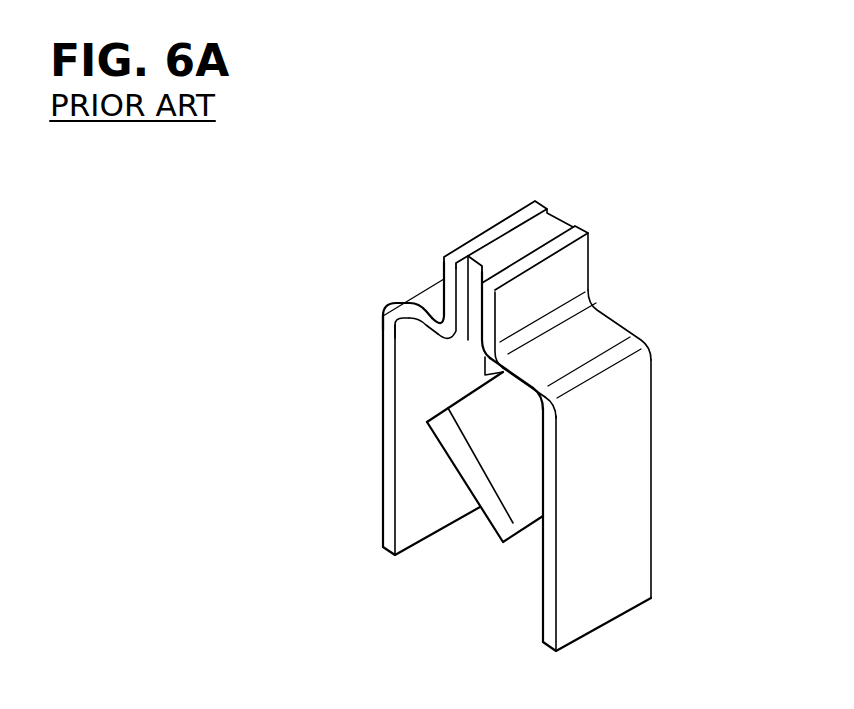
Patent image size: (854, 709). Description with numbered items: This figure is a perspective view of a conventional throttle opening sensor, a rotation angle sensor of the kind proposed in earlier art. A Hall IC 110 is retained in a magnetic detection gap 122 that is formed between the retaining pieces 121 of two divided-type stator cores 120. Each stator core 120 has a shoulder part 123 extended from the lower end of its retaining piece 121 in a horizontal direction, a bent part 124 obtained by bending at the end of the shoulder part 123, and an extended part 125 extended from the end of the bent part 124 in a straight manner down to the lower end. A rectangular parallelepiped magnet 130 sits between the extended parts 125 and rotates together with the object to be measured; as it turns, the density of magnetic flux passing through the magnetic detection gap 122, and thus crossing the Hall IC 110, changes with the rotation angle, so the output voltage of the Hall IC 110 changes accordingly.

The Hall IC 110 is at (510, 247).
The stator core 120 is at (383, 360).
The retaining piece 121 is at (437, 262).
The magnetic detection gap 122 is at (565, 216).
The shoulder part 123 is at (424, 294).
The bent part 124 is at (383, 313).
The extended part 125 is at (381, 465).
The magnet 130 is at (498, 520).